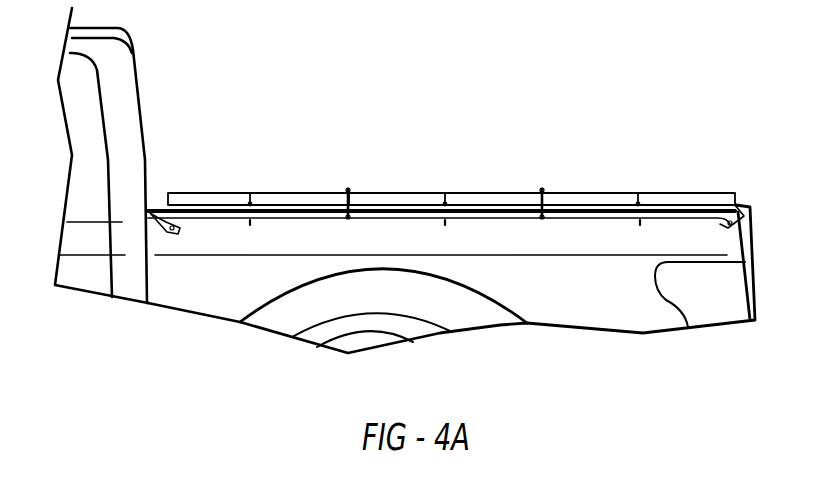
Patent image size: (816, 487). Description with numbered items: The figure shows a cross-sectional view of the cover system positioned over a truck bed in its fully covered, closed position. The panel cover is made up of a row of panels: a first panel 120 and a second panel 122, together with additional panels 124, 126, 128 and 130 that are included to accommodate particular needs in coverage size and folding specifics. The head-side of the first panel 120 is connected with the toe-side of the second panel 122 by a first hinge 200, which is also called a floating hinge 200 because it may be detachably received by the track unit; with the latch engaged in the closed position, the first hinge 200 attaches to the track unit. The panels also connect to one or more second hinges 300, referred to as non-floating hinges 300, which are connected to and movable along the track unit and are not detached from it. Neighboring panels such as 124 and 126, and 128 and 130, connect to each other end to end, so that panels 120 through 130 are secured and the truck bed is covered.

The first panel 120 is at (702, 195).
The second panel 122 is at (607, 195).
The panel 124 is at (493, 195).
The panel 126 is at (392, 192).
The panel 128 is at (302, 192).
The panel 130 is at (198, 192).
The first hinge 200 is at (250, 224).
The second hinge 300 is at (350, 191).